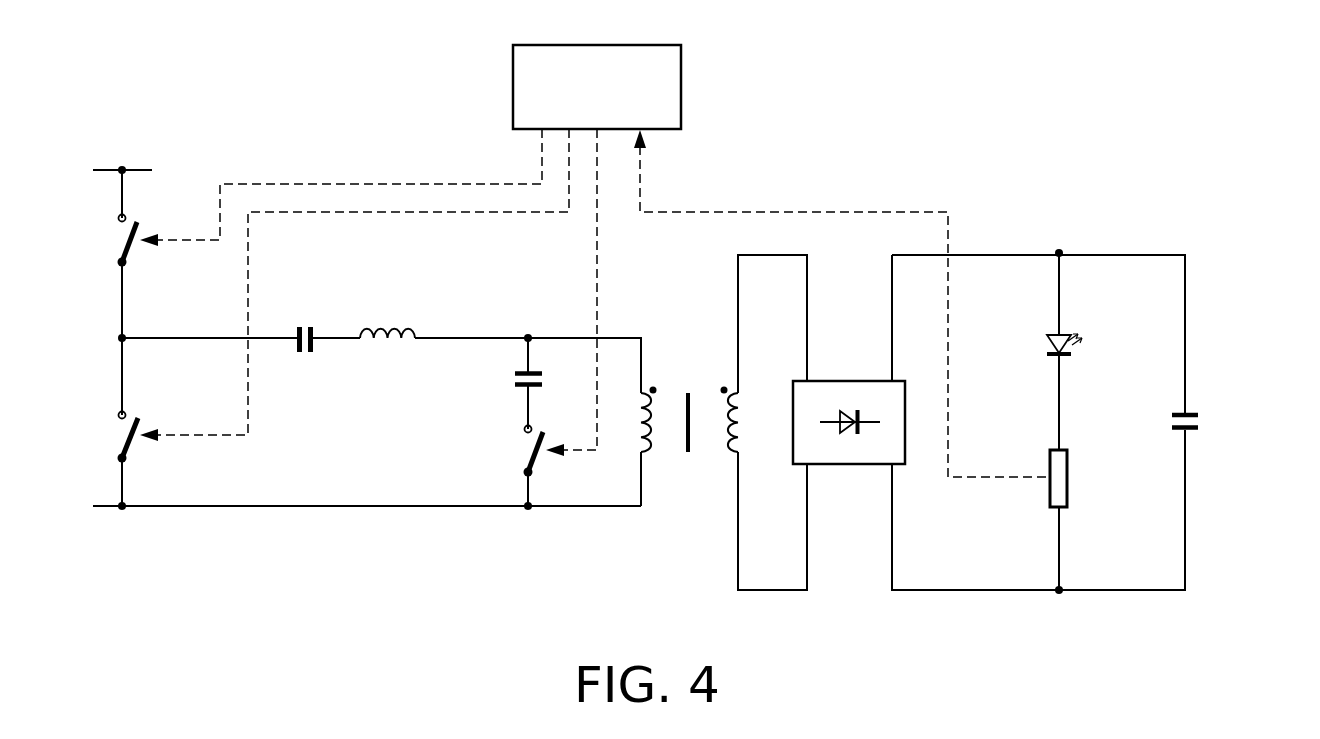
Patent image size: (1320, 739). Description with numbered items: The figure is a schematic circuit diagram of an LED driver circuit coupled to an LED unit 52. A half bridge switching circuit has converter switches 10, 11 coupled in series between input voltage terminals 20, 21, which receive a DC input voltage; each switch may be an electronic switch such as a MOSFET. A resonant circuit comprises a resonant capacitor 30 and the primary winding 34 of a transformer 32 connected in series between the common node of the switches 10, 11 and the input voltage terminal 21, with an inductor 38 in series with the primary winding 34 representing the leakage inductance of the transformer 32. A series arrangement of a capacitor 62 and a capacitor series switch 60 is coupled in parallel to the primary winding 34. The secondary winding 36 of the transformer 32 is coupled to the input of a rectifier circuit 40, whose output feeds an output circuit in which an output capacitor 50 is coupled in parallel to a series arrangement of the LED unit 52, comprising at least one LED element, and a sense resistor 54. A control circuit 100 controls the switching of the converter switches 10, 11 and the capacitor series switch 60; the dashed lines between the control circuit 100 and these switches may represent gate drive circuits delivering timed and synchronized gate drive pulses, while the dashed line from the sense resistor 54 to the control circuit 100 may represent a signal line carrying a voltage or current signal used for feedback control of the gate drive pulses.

The control circuit 100 is at (513, 78).
The input voltage terminal 20 is at (110, 170).
The converter switch 10 is at (120, 242).
The converter switch 11 is at (120, 437).
The input voltage terminal 21 is at (101, 508).
The resonant capacitor 30 is at (300, 354).
The inductor 38 is at (400, 344).
The capacitor 62 is at (513, 378).
The capacitor series switch 60 is at (527, 449).
The transformer 32 is at (688, 362).
The primary winding 34 is at (645, 454).
The secondary winding 36 is at (734, 454).
The rectifier circuit 40 is at (848, 466).
The LED unit 52 is at (1045, 342).
The sense resistor 54 is at (1069, 462).
The output capacitor 50 is at (1199, 420).